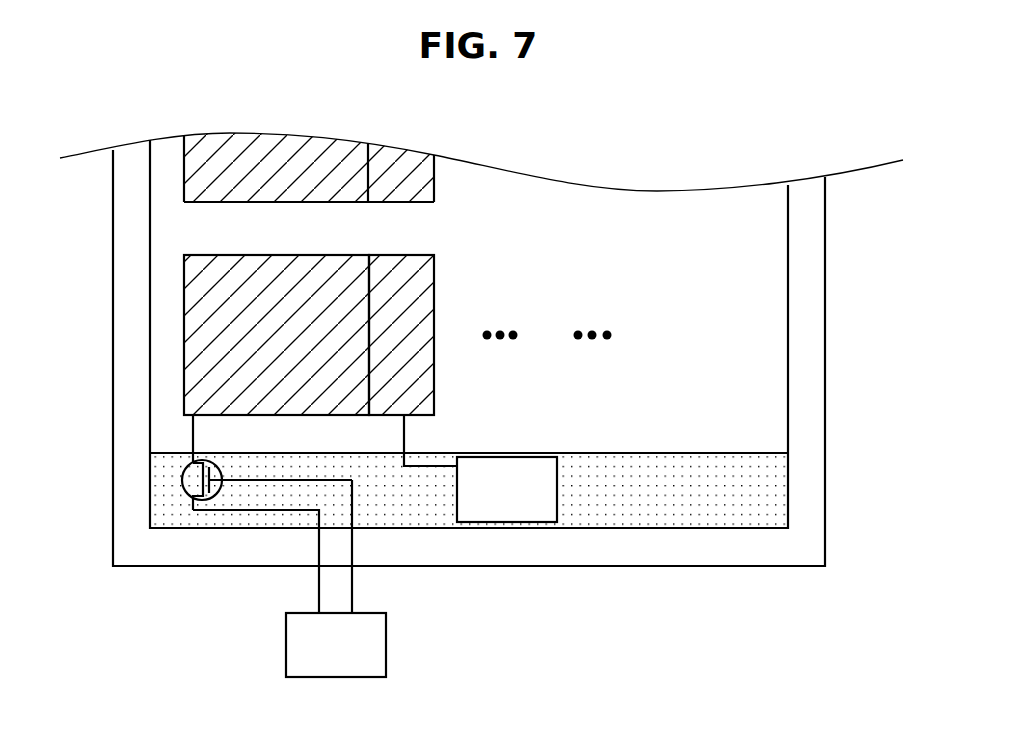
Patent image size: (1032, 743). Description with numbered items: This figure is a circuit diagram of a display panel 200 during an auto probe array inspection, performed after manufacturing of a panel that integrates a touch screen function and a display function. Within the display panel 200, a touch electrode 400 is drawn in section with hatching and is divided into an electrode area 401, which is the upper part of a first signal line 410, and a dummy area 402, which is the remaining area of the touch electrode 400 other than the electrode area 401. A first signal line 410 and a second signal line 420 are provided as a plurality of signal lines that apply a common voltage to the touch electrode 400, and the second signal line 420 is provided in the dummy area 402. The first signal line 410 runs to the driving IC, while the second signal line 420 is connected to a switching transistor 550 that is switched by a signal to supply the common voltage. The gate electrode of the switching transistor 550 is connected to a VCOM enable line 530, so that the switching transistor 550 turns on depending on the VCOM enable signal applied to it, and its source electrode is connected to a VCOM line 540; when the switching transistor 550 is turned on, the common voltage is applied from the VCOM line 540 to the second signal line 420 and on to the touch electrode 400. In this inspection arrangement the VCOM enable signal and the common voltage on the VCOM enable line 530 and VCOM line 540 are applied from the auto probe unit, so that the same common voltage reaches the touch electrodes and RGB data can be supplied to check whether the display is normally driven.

The display panel 200 is at (825, 371).
The touch electrode 400 is at (226, 267).
The electrode area 401 is at (434, 243).
The dummy area 402 is at (369, 243).
The first signal line 410 is at (404, 440).
The second signal line 420 is at (193, 431).
The VCOM enable line 530 is at (352, 547).
The VCOM line 540 is at (319, 547).
The switching transistor 550 is at (182, 478).